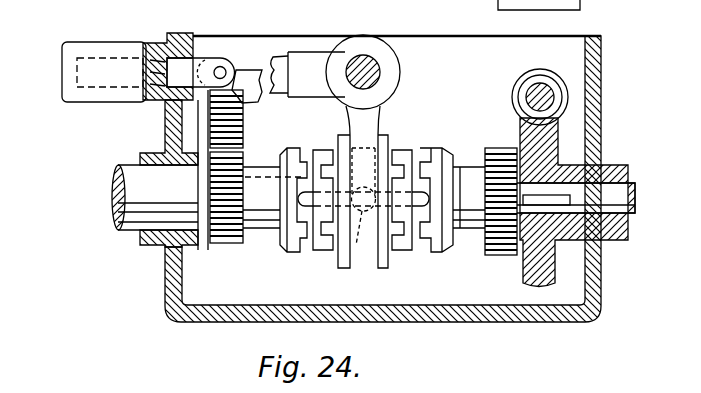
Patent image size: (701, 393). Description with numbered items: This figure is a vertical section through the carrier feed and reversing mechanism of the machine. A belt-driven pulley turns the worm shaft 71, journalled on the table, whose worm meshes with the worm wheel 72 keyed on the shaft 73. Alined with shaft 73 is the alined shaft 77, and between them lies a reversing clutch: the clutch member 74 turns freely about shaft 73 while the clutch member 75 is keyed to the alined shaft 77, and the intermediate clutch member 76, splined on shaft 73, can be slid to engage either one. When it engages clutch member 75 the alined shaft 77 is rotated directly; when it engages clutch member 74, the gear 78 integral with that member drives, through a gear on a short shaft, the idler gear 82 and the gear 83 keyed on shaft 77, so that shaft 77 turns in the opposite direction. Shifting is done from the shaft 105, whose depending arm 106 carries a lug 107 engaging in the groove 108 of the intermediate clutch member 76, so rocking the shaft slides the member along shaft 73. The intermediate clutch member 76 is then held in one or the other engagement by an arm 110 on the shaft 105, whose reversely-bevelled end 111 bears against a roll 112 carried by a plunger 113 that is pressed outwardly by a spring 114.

The worm shaft 71 is at (541, 72).
The worm wheel 72 is at (552, 146).
The shaft 73 is at (298, 297).
The clutch member 74 is at (442, 152).
The clutch member 75 is at (296, 150).
The intermediate clutch member 76 is at (330, 152).
The alined shaft 77 is at (155, 197).
The gear 78 is at (494, 150).
The idler gear 82 is at (245, 132).
The gear 83 is at (236, 242).
The shaft 105 is at (378, 70).
The depending arm 106 is at (382, 122).
The lug 107 is at (365, 198).
The groove 108 is at (376, 250).
The arm 110 is at (268, 62).
The reversely-bevelled end 111 is at (243, 72).
The roll 112 is at (214, 56).
The plunger 113 is at (192, 72).
The spring 114 is at (150, 43).